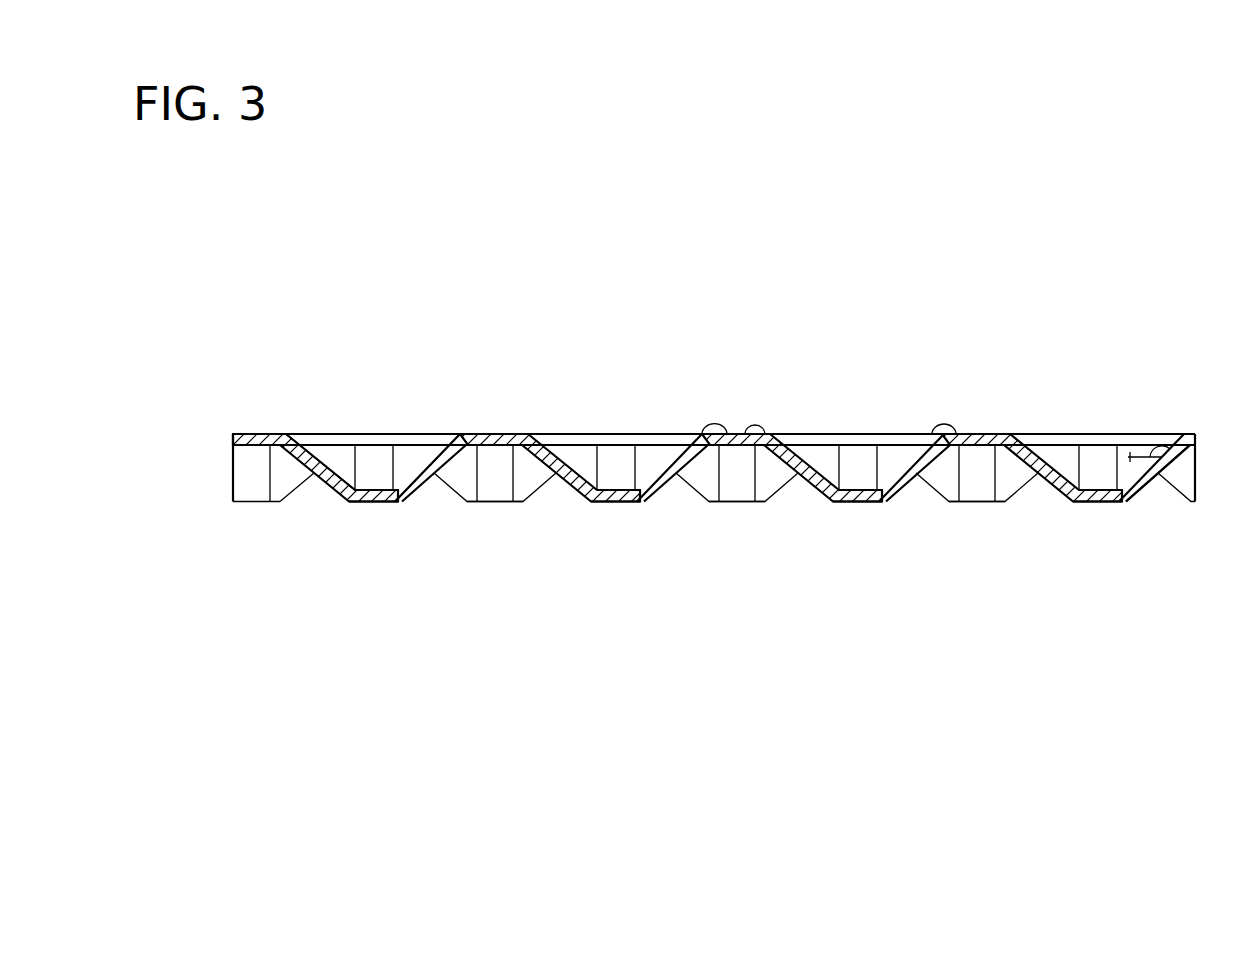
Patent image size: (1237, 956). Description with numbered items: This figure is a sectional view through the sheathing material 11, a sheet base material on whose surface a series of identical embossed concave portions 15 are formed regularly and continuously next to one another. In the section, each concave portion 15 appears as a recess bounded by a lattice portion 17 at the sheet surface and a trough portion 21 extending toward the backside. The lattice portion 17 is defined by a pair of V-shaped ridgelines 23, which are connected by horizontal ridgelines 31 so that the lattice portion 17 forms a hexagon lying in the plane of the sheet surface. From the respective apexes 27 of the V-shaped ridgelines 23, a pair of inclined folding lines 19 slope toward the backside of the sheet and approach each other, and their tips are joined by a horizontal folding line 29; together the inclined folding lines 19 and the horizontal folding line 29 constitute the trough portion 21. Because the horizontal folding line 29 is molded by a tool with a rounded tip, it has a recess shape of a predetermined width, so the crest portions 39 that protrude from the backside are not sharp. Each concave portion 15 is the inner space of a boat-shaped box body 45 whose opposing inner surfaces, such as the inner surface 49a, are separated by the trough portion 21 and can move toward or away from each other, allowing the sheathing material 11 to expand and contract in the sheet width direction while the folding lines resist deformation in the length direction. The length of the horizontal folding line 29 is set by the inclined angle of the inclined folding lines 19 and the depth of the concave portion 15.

The sheathing material 11 is at (812, 310).
The concave portion 15 is at (337, 441).
The lattice portion 17 is at (551, 425).
The inclined folding line 19 is at (415, 433).
The trough portion 21 is at (563, 353).
The V-shaped ridgeline 23 is at (305, 433).
The apex 27 is at (940, 433).
The horizontal folding line 29 is at (617, 445).
The horizontal ridgeline 31 is at (378, 433).
The crest portion 39 is at (493, 503).
The boat-shaped box body 45 is at (395, 518).
The inner surface 49a is at (1133, 458).